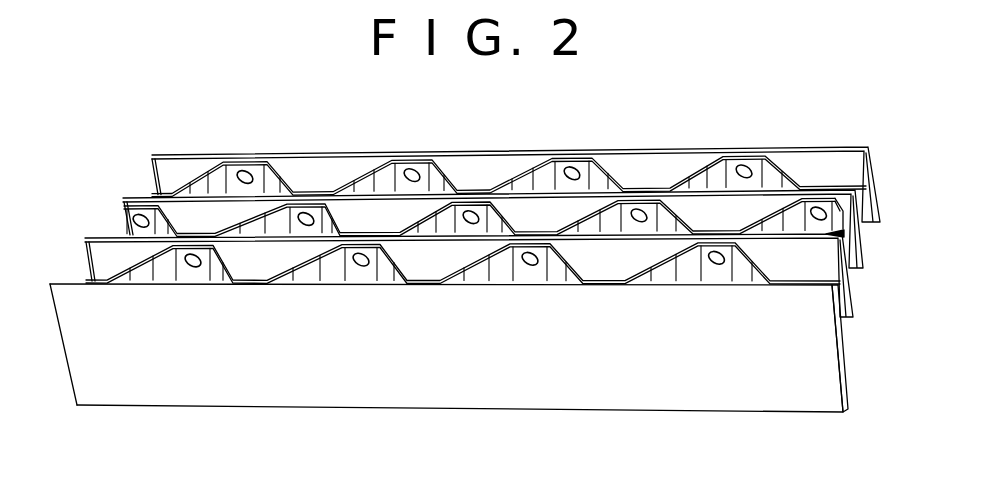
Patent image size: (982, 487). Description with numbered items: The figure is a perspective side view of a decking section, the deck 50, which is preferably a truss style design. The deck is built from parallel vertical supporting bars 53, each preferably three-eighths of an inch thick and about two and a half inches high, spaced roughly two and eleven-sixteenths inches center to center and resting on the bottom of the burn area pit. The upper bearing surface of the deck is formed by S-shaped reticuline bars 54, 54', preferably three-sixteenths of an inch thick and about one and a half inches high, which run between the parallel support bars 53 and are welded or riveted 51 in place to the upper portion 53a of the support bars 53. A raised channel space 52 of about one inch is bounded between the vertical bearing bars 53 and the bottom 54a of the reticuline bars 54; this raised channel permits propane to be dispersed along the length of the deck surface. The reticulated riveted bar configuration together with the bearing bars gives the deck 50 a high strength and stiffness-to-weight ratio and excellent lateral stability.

The deck 50 is at (126, 133).
The weld or rivet 51 is at (566, 170).
The raised channel space 52 is at (848, 333).
The vertical supporting bar 53 is at (98, 354).
The upper portion of support bar 53a is at (82, 312).
The S-shaped reticuline bar 54 is at (476, 194).
The S-shaped reticuline bar 54' is at (479, 170).
The bottom of reticuline bar 54a is at (832, 236).